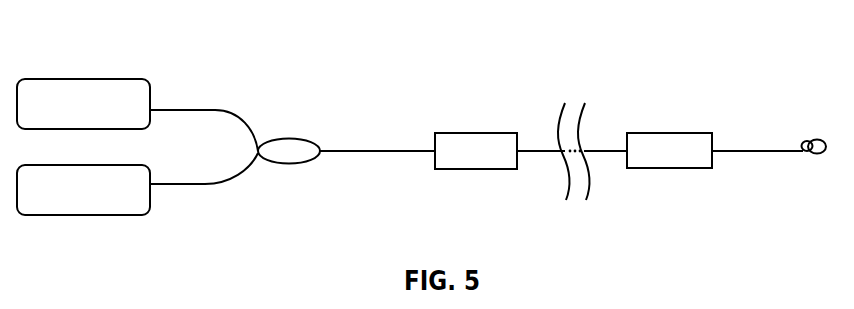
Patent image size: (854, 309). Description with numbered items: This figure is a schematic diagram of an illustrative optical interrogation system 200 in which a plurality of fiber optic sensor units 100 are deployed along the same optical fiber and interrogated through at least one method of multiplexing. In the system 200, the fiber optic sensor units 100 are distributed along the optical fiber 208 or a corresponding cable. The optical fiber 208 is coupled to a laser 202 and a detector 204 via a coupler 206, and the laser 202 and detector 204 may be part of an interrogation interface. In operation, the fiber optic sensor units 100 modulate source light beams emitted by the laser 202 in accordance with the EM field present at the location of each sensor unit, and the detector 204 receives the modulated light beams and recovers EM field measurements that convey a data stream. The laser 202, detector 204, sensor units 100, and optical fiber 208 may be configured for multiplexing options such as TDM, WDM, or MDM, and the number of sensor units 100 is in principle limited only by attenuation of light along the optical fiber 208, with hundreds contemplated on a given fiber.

The optical interrogation system 200 is at (444, 68).
The laser 202 is at (100, 77).
The detector 204 is at (93, 216).
The coupler 206 is at (285, 165).
The optical fiber 208 is at (375, 153).
The fiber optic sensor unit 100 is at (473, 170).